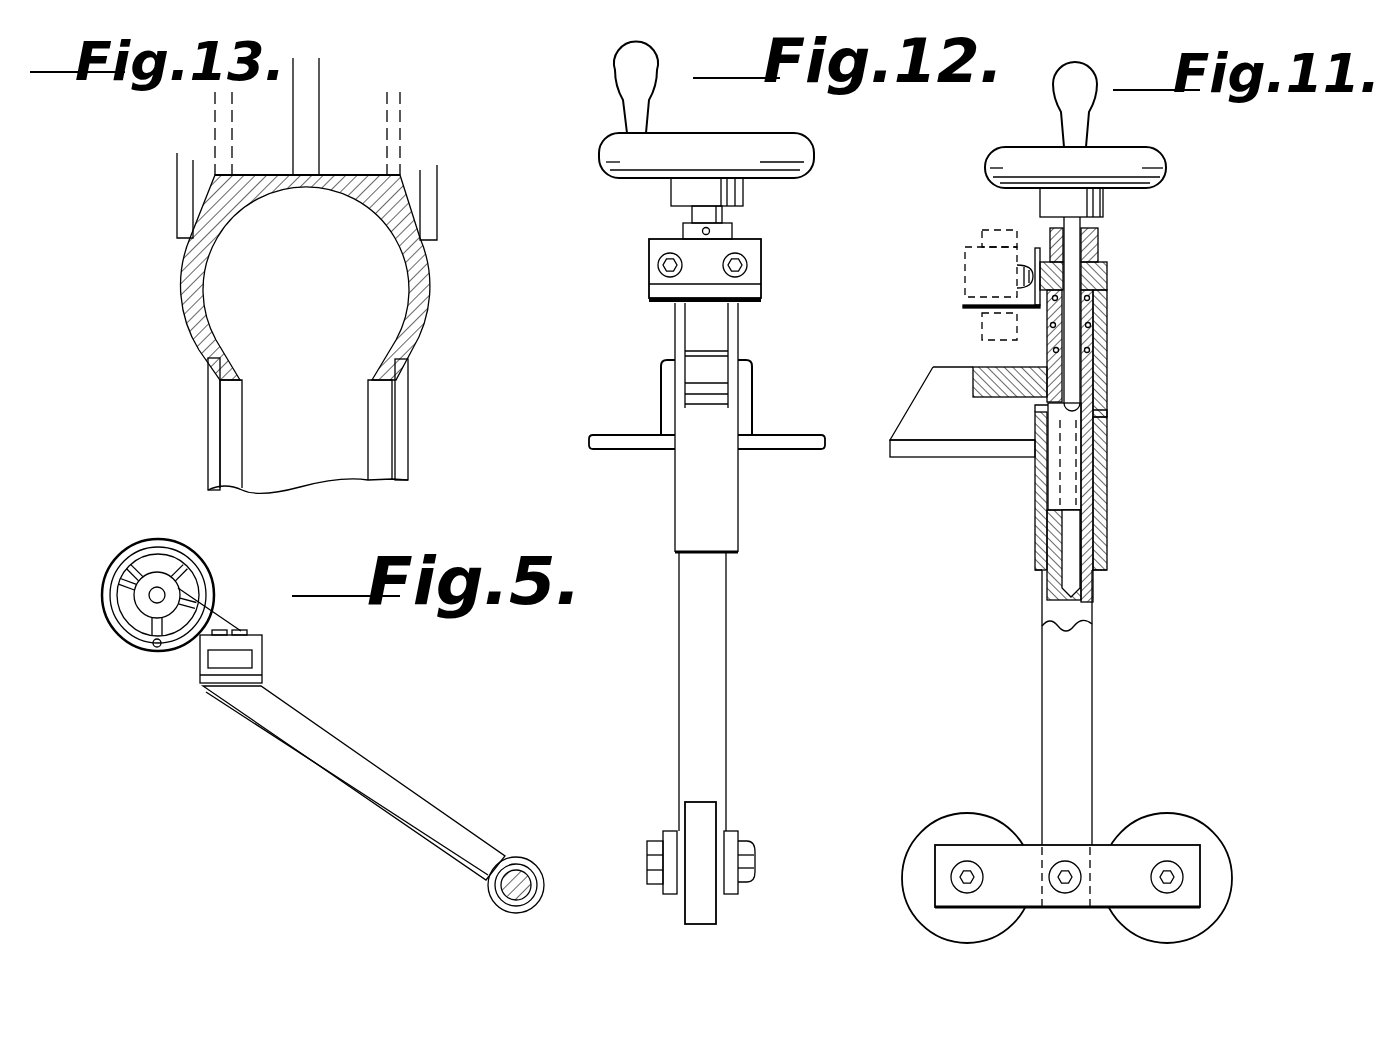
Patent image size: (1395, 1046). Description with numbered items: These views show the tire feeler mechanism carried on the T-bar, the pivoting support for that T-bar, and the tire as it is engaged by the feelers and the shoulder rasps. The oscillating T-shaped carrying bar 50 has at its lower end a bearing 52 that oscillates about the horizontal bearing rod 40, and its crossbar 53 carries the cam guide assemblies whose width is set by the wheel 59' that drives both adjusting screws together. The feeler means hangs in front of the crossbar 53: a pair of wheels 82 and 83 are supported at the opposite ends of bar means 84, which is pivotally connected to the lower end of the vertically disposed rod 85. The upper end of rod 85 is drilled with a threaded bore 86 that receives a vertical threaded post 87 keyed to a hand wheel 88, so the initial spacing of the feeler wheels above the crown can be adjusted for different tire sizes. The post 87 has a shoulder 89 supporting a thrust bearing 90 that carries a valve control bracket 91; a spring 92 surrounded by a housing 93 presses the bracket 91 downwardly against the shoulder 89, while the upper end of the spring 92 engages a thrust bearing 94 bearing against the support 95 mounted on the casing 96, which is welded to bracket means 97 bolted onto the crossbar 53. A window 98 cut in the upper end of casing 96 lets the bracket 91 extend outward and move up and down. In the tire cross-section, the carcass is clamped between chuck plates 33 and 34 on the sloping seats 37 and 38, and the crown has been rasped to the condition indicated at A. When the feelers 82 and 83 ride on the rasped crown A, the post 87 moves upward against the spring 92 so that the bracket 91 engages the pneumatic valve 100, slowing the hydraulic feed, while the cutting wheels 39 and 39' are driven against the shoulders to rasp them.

In FIG. 13, the feeler wheel 82 is at (304, 103).
In FIG. 12, the feeler wheel 82 is at (706, 910).
In FIG. 11, the feeler wheel 82 is at (923, 883).
In FIG. 13, the rasped crown A is at (341, 175).
In FIG. 13, the cutting wheel 39' is at (144, 195).
In FIG. 13, the cutting wheel 39 is at (455, 198).
In FIG. 13, the sloping seat 38 is at (377, 378).
In FIG. 13, the sloping seat 37 is at (243, 380).
In FIG. 13, the chuck plate 33 is at (214, 413).
In FIG. 13, the chuck plate 34 is at (405, 437).
In FIG. 5, the wheel 59' is at (188, 590).
In FIG. 5, the crossbar 53 is at (264, 659).
In FIG. 5, the T-shaped carrying bar 50 is at (360, 780).
In FIG. 5, the bearing 52 is at (558, 832).
In FIG. 5, the bearing rod 40 is at (535, 884).
In FIG. 12, the bracket means 97 is at (786, 437).
In FIG. 11, the bracket means 97 is at (923, 393).
In FIG. 12, the rod 85 is at (712, 635).
In FIG. 11, the rod 85 is at (1077, 663).
In FIG. 12, the bar means 84 is at (732, 833).
In FIG. 11, the bar means 84 is at (1098, 853).
In FIG. 11, the feeler wheel 83 is at (1213, 862).
In FIG. 11, the hand wheel 88 is at (1165, 167).
In FIG. 11, the thrust bearing 90 is at (1098, 393).
In FIG. 11, the support 95 is at (1113, 263).
In FIG. 11, the thrust bearing 94 is at (1107, 287).
In FIG. 11, the housing 93 is at (1100, 293).
In FIG. 11, the spring 92 is at (1107, 327).
In FIG. 11, the pneumatic valve 100 is at (980, 330).
In FIG. 11, the valve control bracket 91 is at (990, 383).
In FIG. 11, the window 98 is at (1040, 407).
In FIG. 11, the shoulder 89 is at (1100, 415).
In FIG. 11, the casing 96 is at (1107, 442).
In FIG. 11, the threaded post 87 is at (1073, 477).
In FIG. 11, the threaded bore 86 is at (1100, 560).